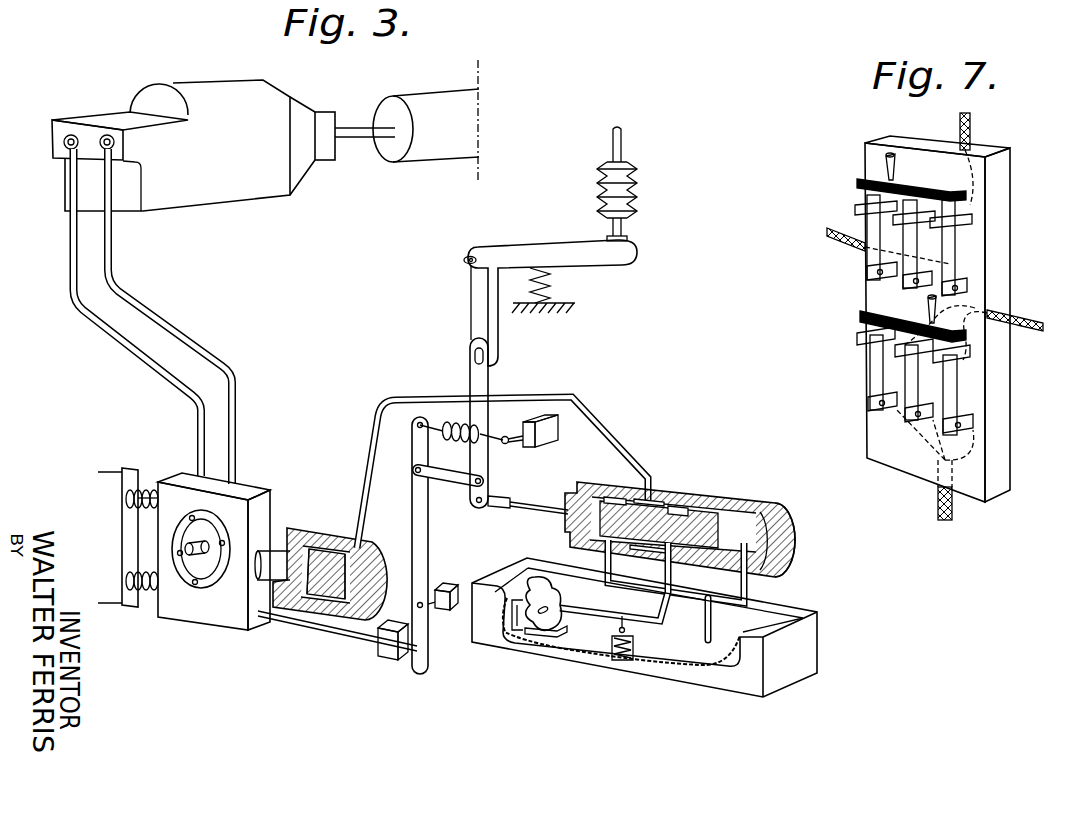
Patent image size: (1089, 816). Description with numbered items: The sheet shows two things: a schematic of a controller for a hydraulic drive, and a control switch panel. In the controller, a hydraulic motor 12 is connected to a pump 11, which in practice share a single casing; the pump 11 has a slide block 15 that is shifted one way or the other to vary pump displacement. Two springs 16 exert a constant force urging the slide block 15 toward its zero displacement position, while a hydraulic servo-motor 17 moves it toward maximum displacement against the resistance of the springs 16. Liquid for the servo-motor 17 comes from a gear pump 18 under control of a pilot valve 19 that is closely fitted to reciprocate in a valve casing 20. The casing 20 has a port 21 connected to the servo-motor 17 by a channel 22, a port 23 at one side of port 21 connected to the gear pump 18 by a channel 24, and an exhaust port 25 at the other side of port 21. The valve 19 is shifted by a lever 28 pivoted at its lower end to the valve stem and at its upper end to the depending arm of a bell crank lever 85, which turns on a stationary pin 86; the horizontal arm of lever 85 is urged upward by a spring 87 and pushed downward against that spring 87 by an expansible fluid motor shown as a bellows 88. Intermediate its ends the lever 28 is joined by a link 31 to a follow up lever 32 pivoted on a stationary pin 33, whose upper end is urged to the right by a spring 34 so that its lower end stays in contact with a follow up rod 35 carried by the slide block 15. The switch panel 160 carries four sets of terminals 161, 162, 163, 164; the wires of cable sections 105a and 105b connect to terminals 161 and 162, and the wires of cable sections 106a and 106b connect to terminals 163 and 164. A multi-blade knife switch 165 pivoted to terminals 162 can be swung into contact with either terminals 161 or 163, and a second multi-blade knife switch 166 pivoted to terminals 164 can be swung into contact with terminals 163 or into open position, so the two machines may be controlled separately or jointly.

In FIG. 3, the pump 11 is at (80, 462).
In FIG. 3, the hydraulic motor 12 is at (265, 135).
In FIG. 3, the slide block 15 is at (214, 562).
In FIG. 3, the springs 16 is at (130, 570).
In FIG. 3, the hydraulic servo-motor 17 is at (328, 530).
In FIG. 3, the gear pump 18 is at (540, 625).
In FIG. 3, the pilot valve 19 is at (736, 516).
In FIG. 3, the valve casing 20 is at (783, 540).
In FIG. 3, the port 21 is at (655, 500).
In FIG. 3, the channel 22 is at (606, 431).
In FIG. 3, the port 23 is at (689, 511).
In FIG. 3, the channel 24 is at (626, 612).
In FIG. 3, the exhaust port 25 is at (625, 496).
In FIG. 3, the lever 28 is at (488, 384).
In FIG. 3, the link 31 is at (455, 482).
In FIG. 3, the follow up lever 32 is at (430, 553).
In FIG. 3, the stationary pin 33 is at (443, 604).
In FIG. 3, the spring 34 is at (462, 436).
In FIG. 3, the follow up rod 35 is at (355, 632).
In FIG. 3, the bell crank lever 85 is at (476, 307).
In FIG. 3, the stationary pin 86 is at (462, 260).
In FIG. 3, the spring 87 is at (553, 289).
In FIG. 3, the bellows 88 is at (637, 181).
In FIG. 7, the cable section 105a is at (972, 128).
In FIG. 7, the cable section 105b is at (840, 233).
In FIG. 7, the cable section 106a is at (1030, 330).
In FIG. 7, the cable section 106b is at (938, 504).
In FIG. 7, the switch panel 160 is at (842, 330).
In FIG. 7, the terminals 161 is at (966, 222).
In FIG. 7, the terminals 162 is at (965, 288).
In FIG. 7, the terminals 163 is at (968, 360).
In FIG. 7, the terminals 164 is at (884, 410).
In FIG. 7, the multi-blade knife switch 165 is at (886, 178).
In FIG. 7, the multi-blade knife switch 166 is at (876, 312).